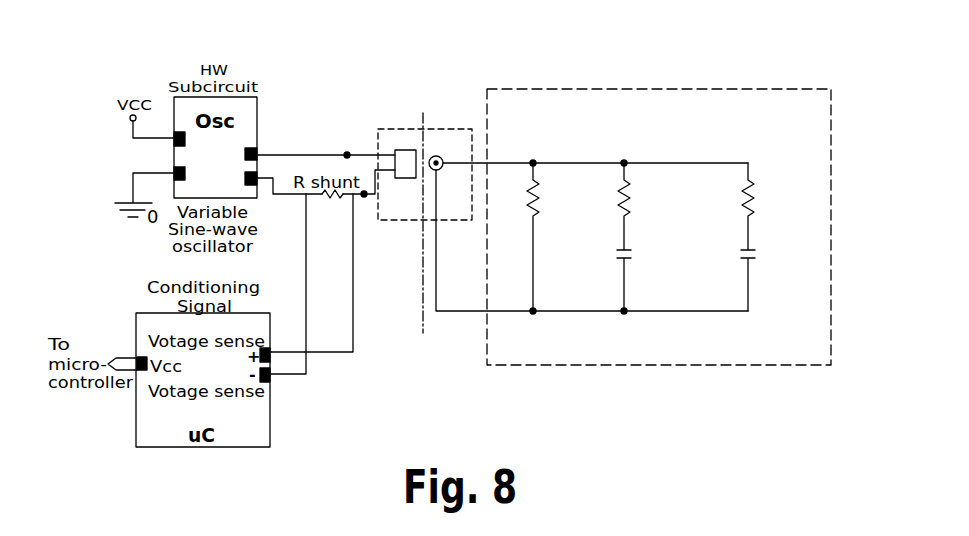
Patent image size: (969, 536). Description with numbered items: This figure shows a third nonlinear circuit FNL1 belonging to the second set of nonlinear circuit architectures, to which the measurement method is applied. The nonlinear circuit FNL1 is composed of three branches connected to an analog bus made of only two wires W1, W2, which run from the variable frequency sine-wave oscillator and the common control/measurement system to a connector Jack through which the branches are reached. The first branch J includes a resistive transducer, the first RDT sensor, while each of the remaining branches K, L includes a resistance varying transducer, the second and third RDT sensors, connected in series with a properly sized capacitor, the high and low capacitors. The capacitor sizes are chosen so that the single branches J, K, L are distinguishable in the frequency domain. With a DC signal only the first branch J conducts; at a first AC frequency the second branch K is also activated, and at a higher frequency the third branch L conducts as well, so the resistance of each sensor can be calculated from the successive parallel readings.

The analog bus wire W1 is at (347, 153).
The analog bus wire W2 is at (364, 197).
The jack connector Jack is at (450, 114).
The nonlinear circuit FNL1 is at (785, 82).
The first branch J is at (541, 175).
The second branch K is at (632, 173).
The third branch L is at (752, 173).